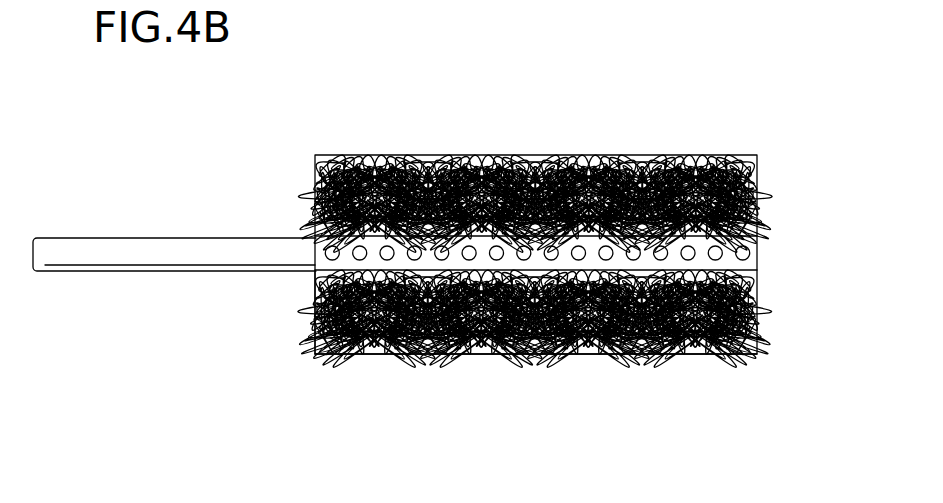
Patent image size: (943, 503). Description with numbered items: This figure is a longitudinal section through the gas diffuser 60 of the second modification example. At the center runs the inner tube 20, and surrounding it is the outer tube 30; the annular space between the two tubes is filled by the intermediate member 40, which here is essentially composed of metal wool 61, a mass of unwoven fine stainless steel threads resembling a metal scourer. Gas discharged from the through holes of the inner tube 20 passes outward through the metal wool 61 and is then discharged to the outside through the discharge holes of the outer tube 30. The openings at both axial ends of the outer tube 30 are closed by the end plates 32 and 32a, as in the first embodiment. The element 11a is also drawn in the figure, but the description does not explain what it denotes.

The shaft / rod 11a is at (108, 243).
The gas diffuser 60 is at (314, 171).
The metal wool 61 is at (663, 172).
The intermediate member 40 is at (547, 227).
The inner tube 20 is at (729, 246).
The end plate 32 is at (757, 285).
The end plate 32a is at (313, 312).
The outer tube 30 is at (707, 355).